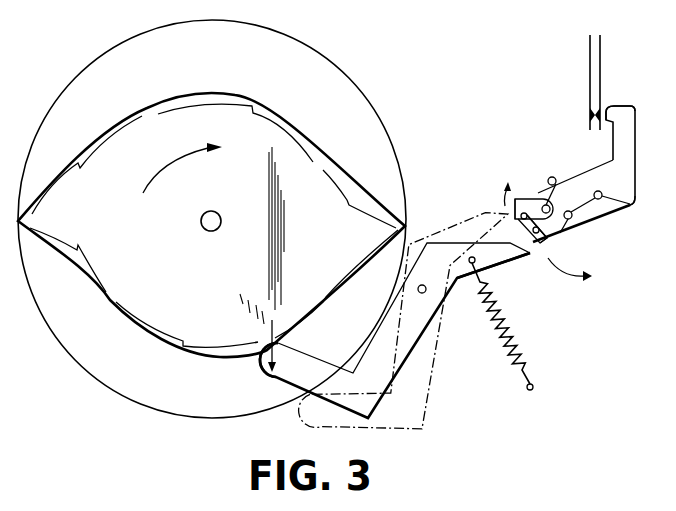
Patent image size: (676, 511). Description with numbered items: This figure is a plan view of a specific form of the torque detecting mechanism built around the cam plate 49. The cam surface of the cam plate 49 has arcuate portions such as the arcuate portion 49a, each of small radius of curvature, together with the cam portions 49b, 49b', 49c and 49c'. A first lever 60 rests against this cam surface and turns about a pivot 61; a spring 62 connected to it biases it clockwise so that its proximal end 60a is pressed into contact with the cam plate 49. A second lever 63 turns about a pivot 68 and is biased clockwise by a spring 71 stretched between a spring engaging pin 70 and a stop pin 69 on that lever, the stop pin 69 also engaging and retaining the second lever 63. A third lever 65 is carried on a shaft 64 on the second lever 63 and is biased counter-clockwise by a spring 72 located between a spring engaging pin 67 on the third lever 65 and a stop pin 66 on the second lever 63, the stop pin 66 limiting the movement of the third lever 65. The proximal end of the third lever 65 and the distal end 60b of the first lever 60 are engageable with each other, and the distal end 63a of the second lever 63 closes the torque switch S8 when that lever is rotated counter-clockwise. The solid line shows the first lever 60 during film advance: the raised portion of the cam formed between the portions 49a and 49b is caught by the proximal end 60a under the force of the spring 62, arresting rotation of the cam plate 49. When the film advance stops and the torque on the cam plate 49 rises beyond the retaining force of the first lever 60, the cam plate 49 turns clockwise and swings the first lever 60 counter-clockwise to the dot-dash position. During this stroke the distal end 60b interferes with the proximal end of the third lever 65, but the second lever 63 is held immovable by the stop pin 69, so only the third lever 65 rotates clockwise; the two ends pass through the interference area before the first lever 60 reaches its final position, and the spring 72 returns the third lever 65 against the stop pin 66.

The cam plate 49 is at (191, 106).
The arcuate portion 49a is at (214, 225).
The cam portion 49b is at (336, 284).
The cam portion 49b' is at (87, 165).
The cam portion 49c is at (355, 201).
The cam portion 49c' is at (74, 256).
The first lever 60 is at (420, 330).
The proximal end of first lever 60a is at (259, 361).
The distal end of first lever 60b is at (497, 271).
The pivot 61 is at (425, 286).
The spring 62 is at (515, 333).
The second lever 63 is at (634, 165).
The distal end of second lever 63a is at (619, 104).
The shaft 64 is at (536, 198).
The third lever 65 is at (514, 205).
The stop pin 66 is at (548, 242).
The spring engaging pin 67 is at (557, 271).
The pivot 68 is at (626, 205).
The stop pin 69 is at (548, 179).
The spring engaging pin 70 is at (570, 211).
The spring 71 is at (556, 177).
The spring 72 is at (561, 233).
The torque switch S8 is at (601, 46).